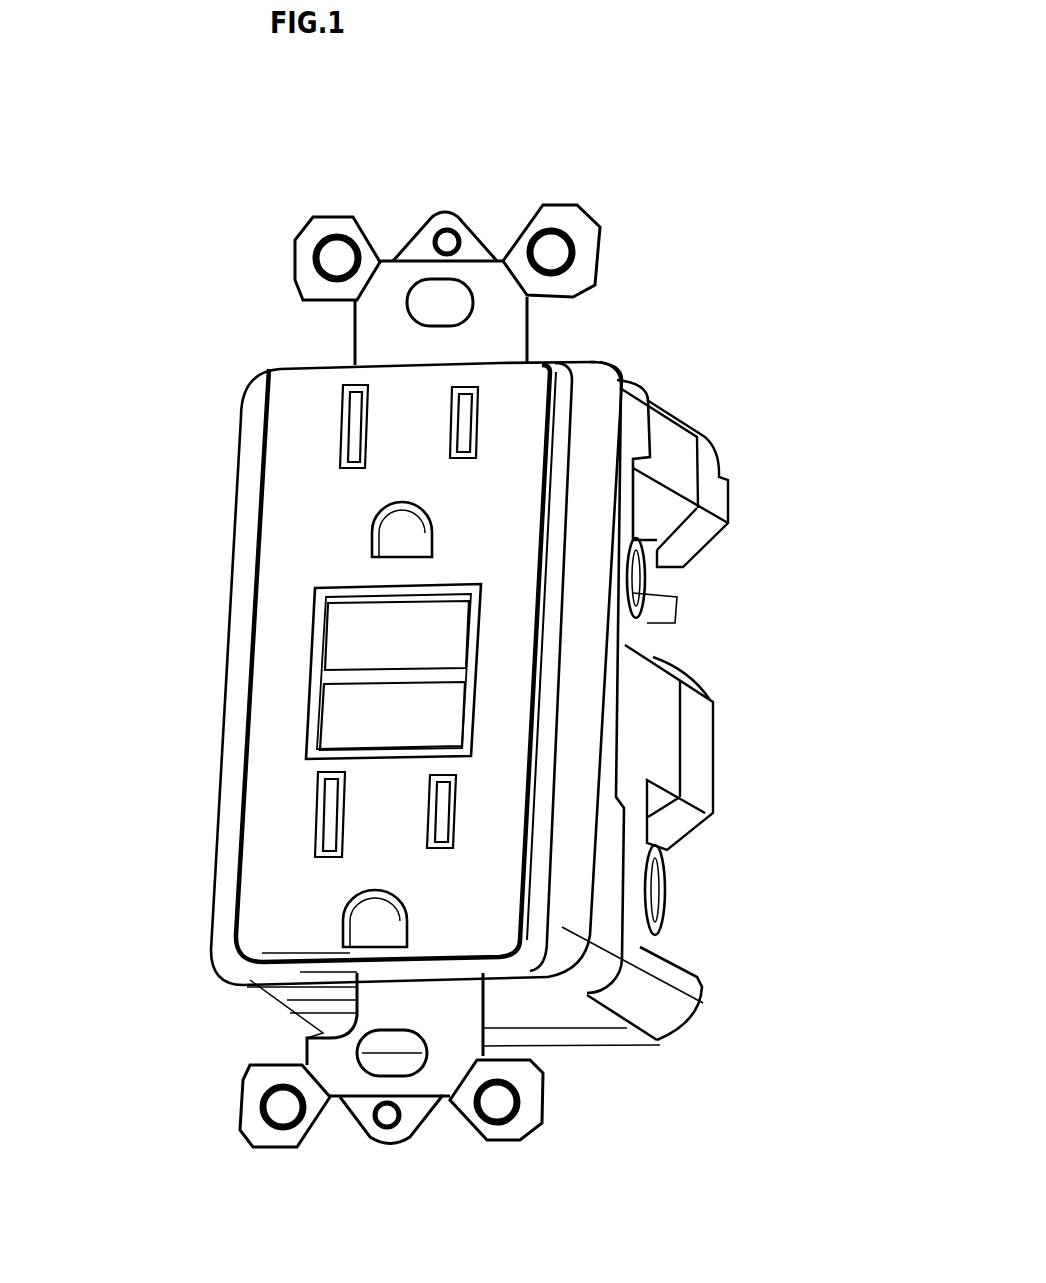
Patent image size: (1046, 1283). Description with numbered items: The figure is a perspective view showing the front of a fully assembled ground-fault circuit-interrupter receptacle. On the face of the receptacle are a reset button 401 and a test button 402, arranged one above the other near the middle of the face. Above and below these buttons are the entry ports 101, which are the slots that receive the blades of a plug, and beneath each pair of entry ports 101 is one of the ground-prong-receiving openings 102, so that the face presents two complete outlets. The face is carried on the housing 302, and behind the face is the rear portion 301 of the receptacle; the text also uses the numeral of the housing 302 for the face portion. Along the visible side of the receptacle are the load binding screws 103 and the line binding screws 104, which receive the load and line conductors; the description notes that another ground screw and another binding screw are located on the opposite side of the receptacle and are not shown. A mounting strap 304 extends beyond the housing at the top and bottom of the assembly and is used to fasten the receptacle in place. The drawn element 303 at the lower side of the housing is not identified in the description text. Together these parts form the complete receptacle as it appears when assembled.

The entry ports 101 is at (450, 421).
The Ground-prong-receiving openings 102 is at (373, 523).
The load binding screws 103 is at (647, 587).
The line binding screws 104 is at (663, 877).
The rear portion 301 is at (717, 470).
The housing 302 is at (663, 718).
The bottom flange of housing 303 is at (693, 992).
The mounting strap 304 is at (470, 240).
The reset button 401 is at (417, 588).
The test button 402 is at (352, 737).